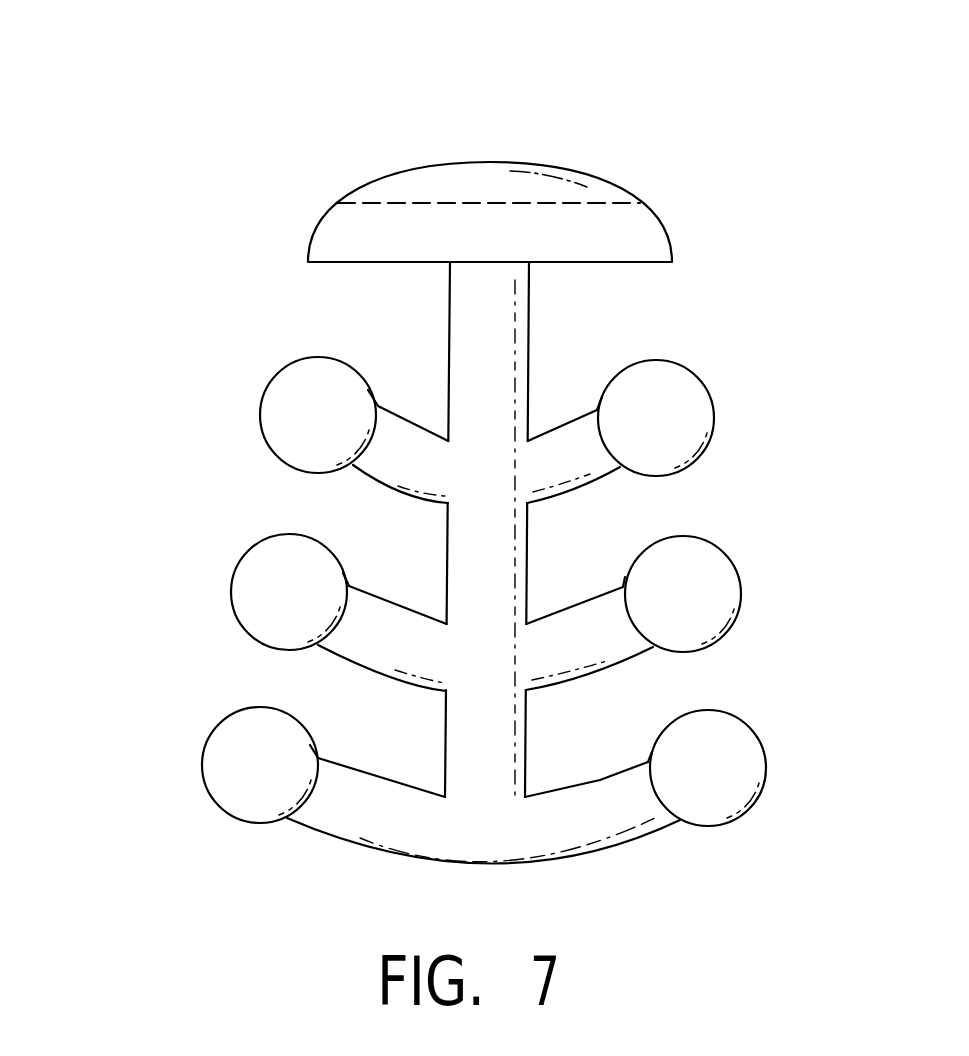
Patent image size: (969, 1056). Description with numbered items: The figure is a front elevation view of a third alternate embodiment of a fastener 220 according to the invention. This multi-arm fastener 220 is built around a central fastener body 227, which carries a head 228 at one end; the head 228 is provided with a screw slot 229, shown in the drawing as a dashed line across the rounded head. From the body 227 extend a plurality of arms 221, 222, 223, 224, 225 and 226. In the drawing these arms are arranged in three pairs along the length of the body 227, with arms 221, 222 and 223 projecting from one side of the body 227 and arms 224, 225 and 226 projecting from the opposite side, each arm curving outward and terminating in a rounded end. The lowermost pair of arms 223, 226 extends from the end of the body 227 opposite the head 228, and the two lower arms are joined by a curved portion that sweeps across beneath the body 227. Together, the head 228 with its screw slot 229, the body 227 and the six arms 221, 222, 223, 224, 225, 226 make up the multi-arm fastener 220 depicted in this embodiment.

The fastener 220 is at (515, 90).
The arm 221 is at (305, 392).
The arm 222 is at (269, 570).
The arm 223 is at (345, 845).
The arm 224 is at (669, 396).
The arm 225 is at (679, 582).
The arm 226 is at (683, 739).
The fastener body 227 is at (328, 502).
The head 228 is at (490, 144).
The screw slot 229 is at (542, 147).